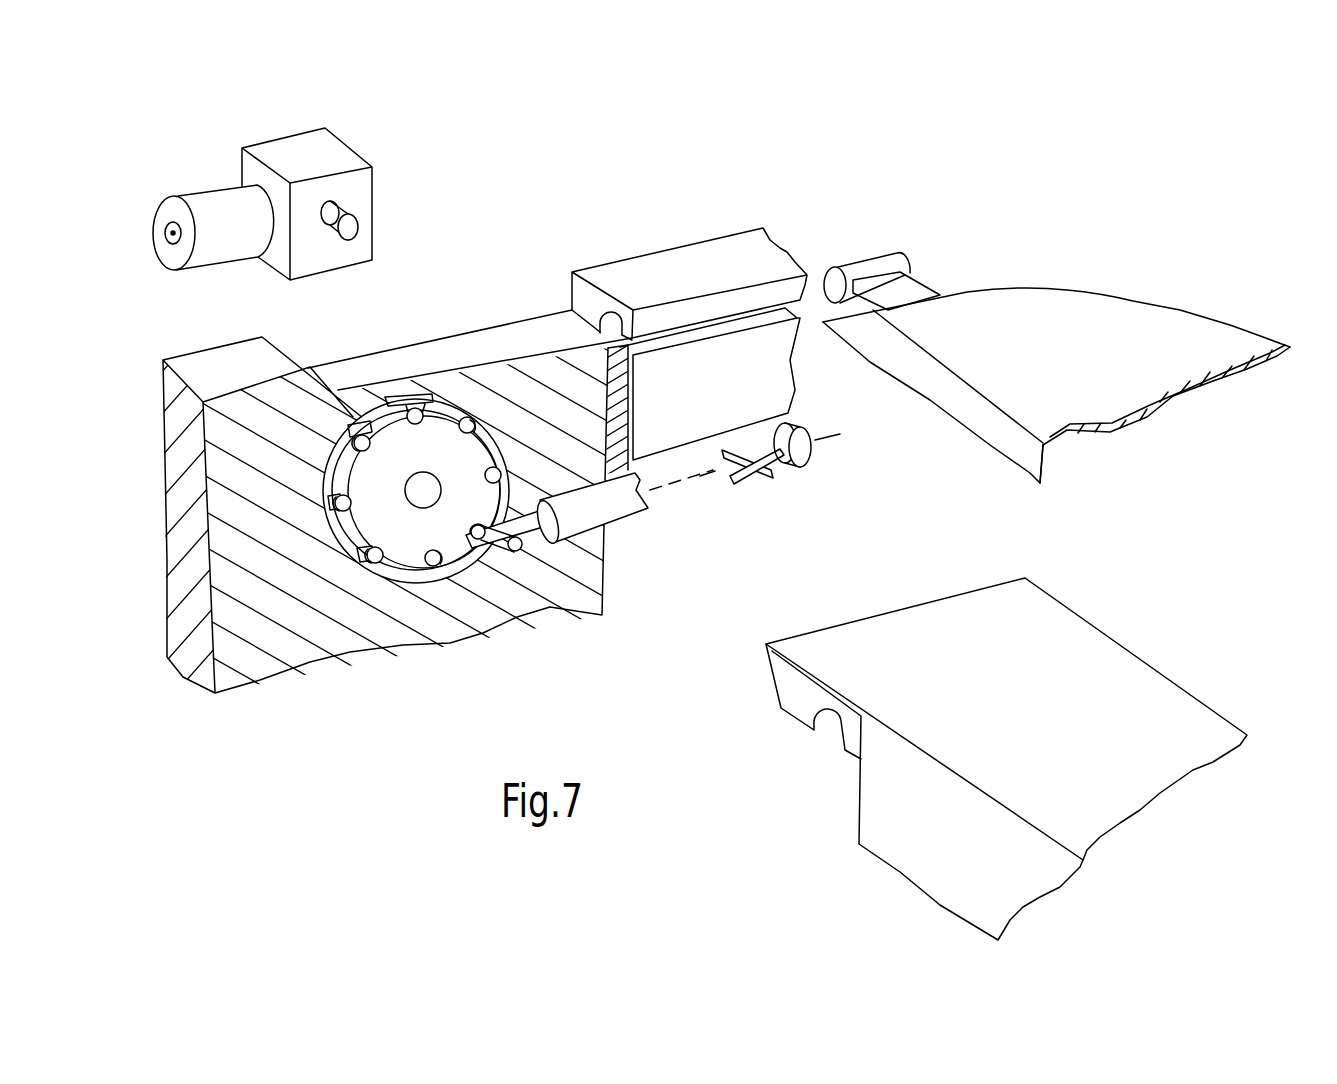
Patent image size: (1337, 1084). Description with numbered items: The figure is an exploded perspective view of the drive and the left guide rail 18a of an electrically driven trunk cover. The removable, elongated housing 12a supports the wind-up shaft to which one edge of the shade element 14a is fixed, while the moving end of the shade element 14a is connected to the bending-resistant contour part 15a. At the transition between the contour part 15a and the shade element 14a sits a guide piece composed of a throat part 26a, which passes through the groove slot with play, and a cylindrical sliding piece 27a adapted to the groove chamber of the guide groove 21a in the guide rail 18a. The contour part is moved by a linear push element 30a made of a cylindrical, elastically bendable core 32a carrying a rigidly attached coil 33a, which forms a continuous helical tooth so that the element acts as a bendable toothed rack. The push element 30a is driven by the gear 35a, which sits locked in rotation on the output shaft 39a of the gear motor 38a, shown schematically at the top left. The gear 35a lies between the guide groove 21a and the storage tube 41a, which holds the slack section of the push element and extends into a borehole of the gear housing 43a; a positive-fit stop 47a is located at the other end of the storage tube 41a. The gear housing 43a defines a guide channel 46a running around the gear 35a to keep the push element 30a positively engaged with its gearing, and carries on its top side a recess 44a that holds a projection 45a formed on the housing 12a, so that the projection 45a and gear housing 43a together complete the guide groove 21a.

The housing 12a is at (1039, 735).
The shade element 14a is at (1023, 453).
The contour part 15a is at (1110, 373).
The guide rail 18a is at (694, 208).
The guide groove 21a is at (611, 330).
The throat part 26a is at (908, 290).
The sliding piece 27a is at (860, 255).
The push element 30a is at (398, 483).
The core 32a is at (475, 550).
The coil 33a is at (388, 578).
The gear 35a is at (435, 448).
The gear motor 38a is at (336, 164).
The output shaft 39a is at (350, 225).
The storage tube 41a is at (630, 518).
The gear housing 43a is at (583, 588).
The recess 44a is at (533, 288).
The projection 45a is at (865, 635).
The guide channel 46a is at (190, 662).
The positive-fit stop 47a is at (812, 440).